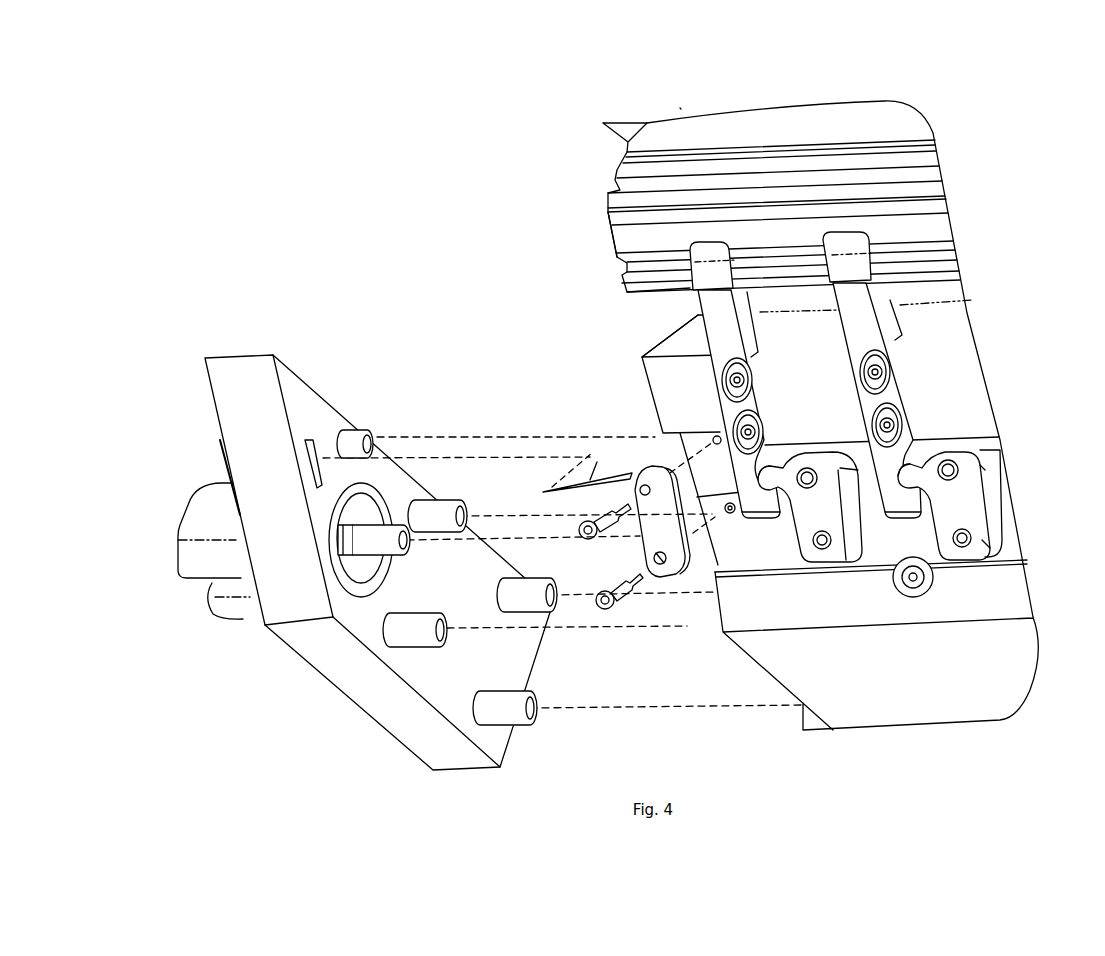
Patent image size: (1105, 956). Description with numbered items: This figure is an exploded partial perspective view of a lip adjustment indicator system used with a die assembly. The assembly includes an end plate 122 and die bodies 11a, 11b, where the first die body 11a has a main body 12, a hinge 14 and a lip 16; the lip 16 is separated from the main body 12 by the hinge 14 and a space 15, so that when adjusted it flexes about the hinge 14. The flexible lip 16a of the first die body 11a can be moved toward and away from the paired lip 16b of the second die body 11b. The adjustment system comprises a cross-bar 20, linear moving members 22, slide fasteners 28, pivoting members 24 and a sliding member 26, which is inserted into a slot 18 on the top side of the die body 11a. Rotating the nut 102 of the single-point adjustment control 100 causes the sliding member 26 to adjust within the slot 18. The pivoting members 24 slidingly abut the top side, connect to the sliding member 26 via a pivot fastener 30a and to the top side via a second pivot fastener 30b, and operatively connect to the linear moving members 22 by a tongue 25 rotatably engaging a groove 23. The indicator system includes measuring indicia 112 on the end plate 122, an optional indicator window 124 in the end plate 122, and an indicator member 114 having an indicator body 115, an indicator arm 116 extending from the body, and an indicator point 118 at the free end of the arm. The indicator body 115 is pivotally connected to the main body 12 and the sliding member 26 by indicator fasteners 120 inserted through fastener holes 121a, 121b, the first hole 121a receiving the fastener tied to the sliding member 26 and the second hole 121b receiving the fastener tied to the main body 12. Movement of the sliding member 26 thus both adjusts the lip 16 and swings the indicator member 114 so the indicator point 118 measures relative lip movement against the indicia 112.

The first die body 11a is at (598, 246).
The second die body 11b is at (675, 138).
The main body 12 is at (905, 688).
The hinge 14 is at (956, 292).
The space 15 is at (650, 312).
The lip 16 is at (705, 164).
The flexible lip 16a is at (606, 207).
The lip of second die body 16b is at (617, 177).
The slot 18 is at (739, 580).
The cross-bar 20 is at (945, 250).
The linear moving member 22 is at (755, 326).
The groove 23 is at (775, 515).
The pivoting member 24 is at (852, 516).
The tongue 25 is at (775, 470).
The sliding member 26 is at (1001, 540).
The slide fastener 28 is at (745, 378).
The pivot fastener 30a is at (826, 552).
The second pivot fastener 30b is at (810, 473).
The single-point adjustment control 100 is at (343, 562).
The nut 102 is at (182, 527).
The measuring indicia 112 is at (220, 440).
The indicator member 114 is at (645, 553).
The indicator body 115 is at (678, 553).
The indicator arm 116 is at (597, 462).
The indicator point 118 is at (543, 492).
The indicator fastener 120 is at (584, 538).
The first fastener hole 121a is at (670, 578).
The second fastener hole 121b is at (643, 486).
The end plate 122 is at (332, 684).
The indicator window 124 is at (310, 440).